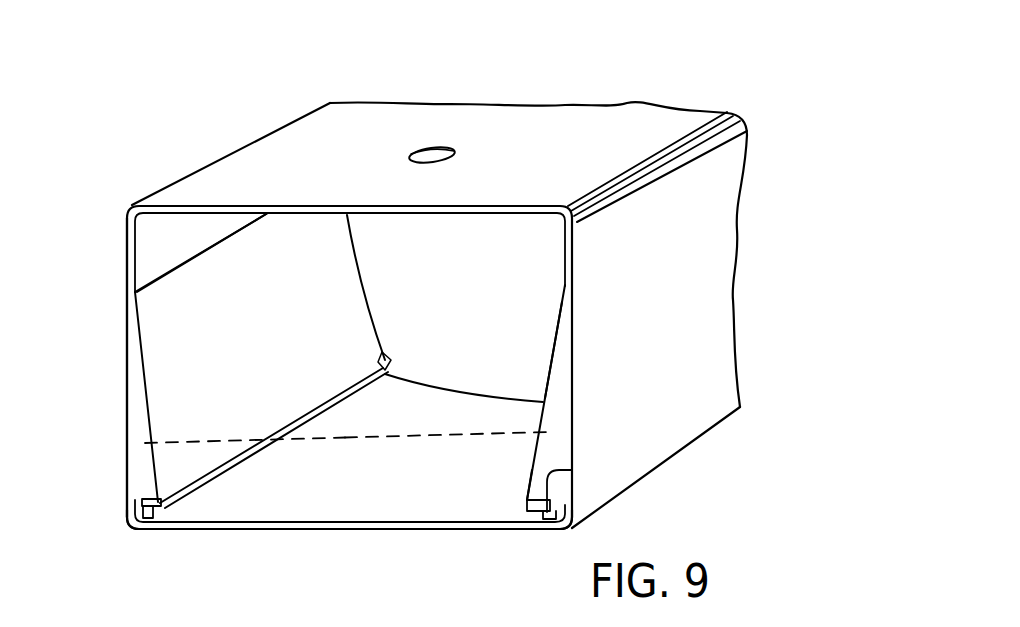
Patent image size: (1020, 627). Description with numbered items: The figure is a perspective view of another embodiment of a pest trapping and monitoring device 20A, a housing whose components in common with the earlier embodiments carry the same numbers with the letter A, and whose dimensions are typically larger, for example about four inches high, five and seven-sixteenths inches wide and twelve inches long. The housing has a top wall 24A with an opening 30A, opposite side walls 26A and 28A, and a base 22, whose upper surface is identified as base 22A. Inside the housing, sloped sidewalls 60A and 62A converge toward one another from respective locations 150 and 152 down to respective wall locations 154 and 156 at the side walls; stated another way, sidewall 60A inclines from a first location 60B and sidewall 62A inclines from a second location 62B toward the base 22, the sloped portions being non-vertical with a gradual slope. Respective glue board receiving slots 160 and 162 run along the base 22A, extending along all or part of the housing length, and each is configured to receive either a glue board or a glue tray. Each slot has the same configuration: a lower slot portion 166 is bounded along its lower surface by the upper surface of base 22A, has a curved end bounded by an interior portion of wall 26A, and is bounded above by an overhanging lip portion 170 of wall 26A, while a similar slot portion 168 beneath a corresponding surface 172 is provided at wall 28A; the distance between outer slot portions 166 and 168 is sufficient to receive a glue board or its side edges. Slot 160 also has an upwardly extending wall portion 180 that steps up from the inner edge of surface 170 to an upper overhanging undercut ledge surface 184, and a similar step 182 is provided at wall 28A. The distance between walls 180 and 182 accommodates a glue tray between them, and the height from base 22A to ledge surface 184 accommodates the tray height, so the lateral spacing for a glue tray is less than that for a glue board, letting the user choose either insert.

The pest trapping and monitoring device 20A is at (211, 146).
The top wall 24A is at (322, 128).
The opening 30A is at (450, 151).
The side wall 26A is at (694, 440).
The side wall 28A is at (127, 401).
The base 22 is at (308, 533).
The base 22A is at (378, 511).
The location 150 is at (562, 292).
The location 152 is at (140, 293).
The wall location 154 is at (527, 501).
The wall location 156 is at (163, 503).
The glue board receiving slot 160 is at (518, 505).
The glue board receiving slot 162 is at (293, 450).
The lower slot portion 166 is at (540, 532).
The slot portion 168 is at (150, 533).
The overhanging lip portion 170 is at (567, 528).
The surface 172 is at (135, 517).
The upwardly extending wall portion 180 is at (572, 465).
The step 182 is at (160, 510).
The undercut ledge surface 184 is at (533, 515).
The sloped sidewall 60A is at (550, 362).
The first location 60B is at (538, 432).
The sloped sidewall 62A is at (243, 385).
The second location 62B is at (158, 440).